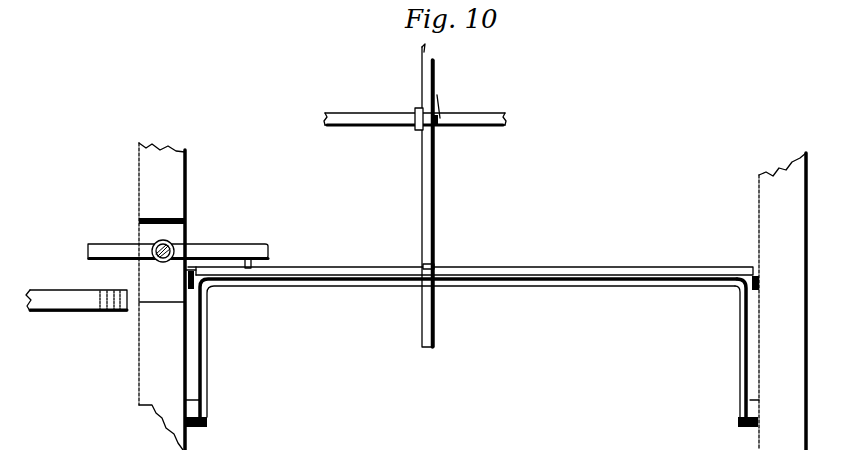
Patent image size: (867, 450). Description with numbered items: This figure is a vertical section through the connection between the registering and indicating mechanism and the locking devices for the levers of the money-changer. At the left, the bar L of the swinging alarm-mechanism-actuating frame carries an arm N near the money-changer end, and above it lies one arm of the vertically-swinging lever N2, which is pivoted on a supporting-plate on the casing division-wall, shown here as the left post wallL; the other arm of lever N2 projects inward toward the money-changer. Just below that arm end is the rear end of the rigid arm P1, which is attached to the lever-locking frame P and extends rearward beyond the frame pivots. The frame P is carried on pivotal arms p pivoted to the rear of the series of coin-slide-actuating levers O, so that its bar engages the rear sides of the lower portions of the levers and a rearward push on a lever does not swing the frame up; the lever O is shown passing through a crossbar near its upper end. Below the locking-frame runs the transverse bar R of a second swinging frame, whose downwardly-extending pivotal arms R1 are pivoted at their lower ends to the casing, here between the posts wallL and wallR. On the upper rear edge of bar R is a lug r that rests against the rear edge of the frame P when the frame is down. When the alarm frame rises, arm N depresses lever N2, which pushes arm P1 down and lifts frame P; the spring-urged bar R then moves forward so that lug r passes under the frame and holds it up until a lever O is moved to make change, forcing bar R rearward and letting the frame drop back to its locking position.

The vertically-swinging lever N2 is at (232, 249).
The rigid arm P1 is at (255, 265).
The lever-locking frame P is at (383, 268).
The lug r is at (433, 268).
The transverse bar R is at (202, 379).
The pivotal arm R1 is at (740, 362).
The pivotal arm p is at (187, 279).
The coin-slide-actuating lever O is at (434, 227).
The bar L is at (68, 292).
The arm N is at (103, 309).
The left post wallL is at (169, 296).
The right post wallR is at (782, 301).
The cross bar crossbar is at (415, 112).